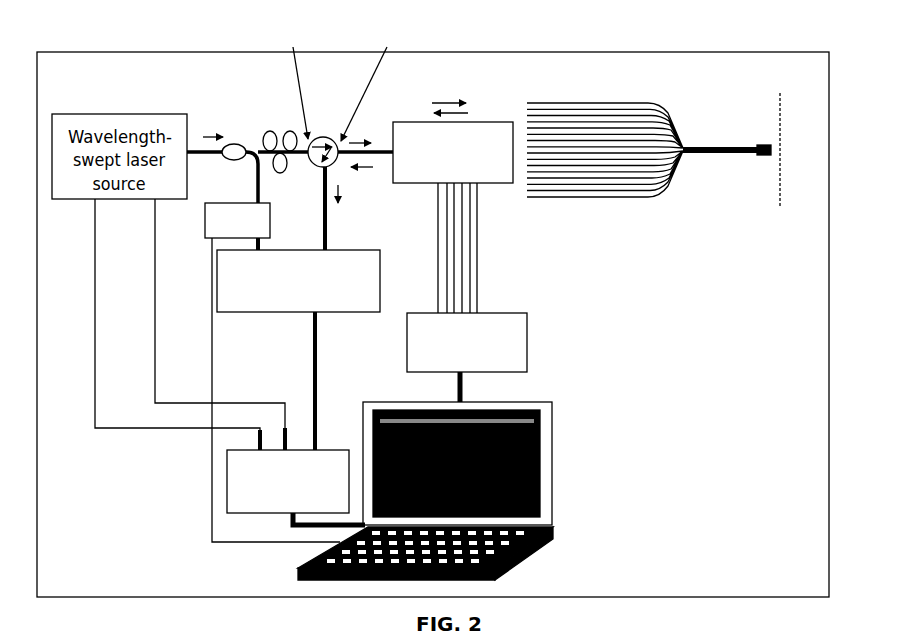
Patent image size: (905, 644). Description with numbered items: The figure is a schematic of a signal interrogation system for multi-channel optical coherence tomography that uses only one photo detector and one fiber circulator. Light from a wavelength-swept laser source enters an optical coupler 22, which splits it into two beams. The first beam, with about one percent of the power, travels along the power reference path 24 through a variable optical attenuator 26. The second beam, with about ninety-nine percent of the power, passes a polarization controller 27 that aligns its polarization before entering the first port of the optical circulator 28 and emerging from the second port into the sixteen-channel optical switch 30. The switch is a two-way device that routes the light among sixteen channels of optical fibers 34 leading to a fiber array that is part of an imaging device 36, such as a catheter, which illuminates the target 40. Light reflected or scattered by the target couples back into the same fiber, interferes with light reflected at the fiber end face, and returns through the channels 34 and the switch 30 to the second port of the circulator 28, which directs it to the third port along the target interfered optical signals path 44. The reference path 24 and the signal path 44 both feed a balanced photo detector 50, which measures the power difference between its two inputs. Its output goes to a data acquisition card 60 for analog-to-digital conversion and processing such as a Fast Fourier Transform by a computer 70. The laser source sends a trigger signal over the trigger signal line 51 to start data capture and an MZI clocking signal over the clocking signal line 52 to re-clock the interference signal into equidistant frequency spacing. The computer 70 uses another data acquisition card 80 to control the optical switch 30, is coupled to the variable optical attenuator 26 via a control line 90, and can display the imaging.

The 1/99 optical coupler 22 is at (228, 106).
The power reference path 24 is at (228, 184).
The variable optical attenuator 26 is at (190, 223).
The polarization controller 27 is at (272, 102).
The optical circulator 28 is at (322, 106).
The 1×16 optical switch 30 is at (408, 104).
The optical fiber channels 34 is at (546, 98).
The imaging device 36 is at (733, 120).
The target 40 is at (765, 90).
The target interfered optical signals path 44 is at (345, 210).
The balanced photo detector 50 is at (212, 270).
The trigger signal line 51 is at (73, 426).
The clocking signal line 52 is at (133, 303).
The data acquisition card 60 is at (202, 476).
The computer 70 is at (563, 440).
The second data acquisition card 80 is at (549, 312).
The control line 90 is at (182, 520).